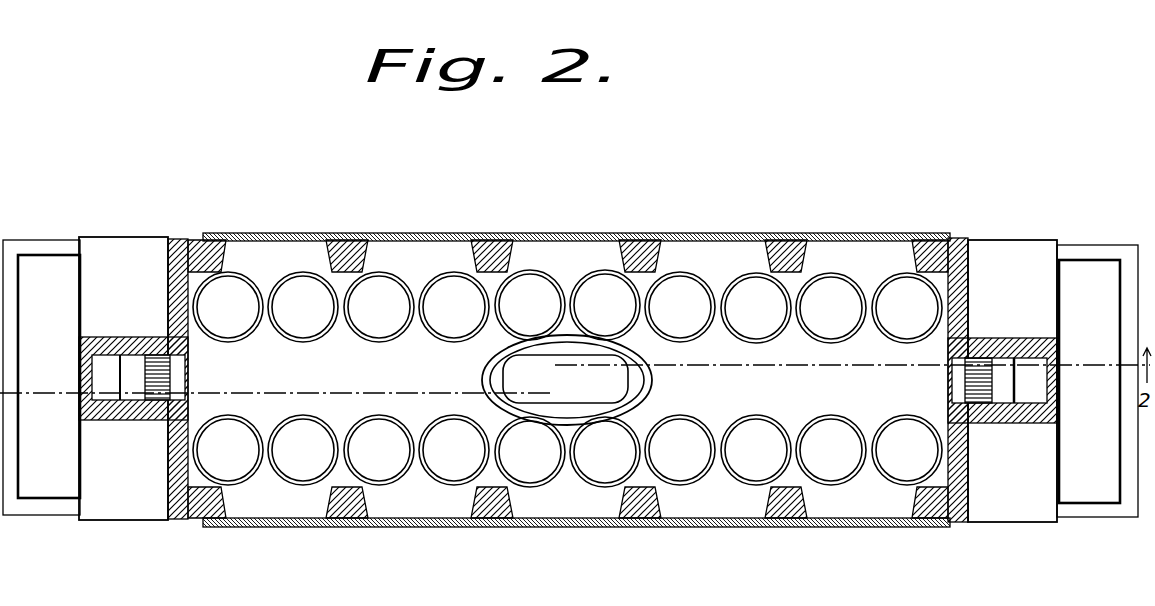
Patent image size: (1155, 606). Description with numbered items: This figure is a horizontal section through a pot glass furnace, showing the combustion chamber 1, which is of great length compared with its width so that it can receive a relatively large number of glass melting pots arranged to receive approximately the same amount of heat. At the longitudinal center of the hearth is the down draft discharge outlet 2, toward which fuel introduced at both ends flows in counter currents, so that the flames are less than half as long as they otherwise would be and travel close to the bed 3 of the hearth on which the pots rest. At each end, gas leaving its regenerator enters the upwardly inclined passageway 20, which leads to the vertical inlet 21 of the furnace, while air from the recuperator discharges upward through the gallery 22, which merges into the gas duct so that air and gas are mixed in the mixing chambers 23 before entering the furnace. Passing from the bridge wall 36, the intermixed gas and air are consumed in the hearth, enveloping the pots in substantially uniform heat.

The combustion chamber 1 is at (379, 378).
The down draft discharge outlet 2 is at (555, 365).
The bed of the hearth 3 is at (756, 378).
The upwardly inclined passageway 20 is at (160, 377).
The vertical inlet 21 is at (182, 395).
The gallery 22 is at (110, 383).
The mixing chamber 23 is at (117, 355).
The bridge wall 36 is at (182, 367).